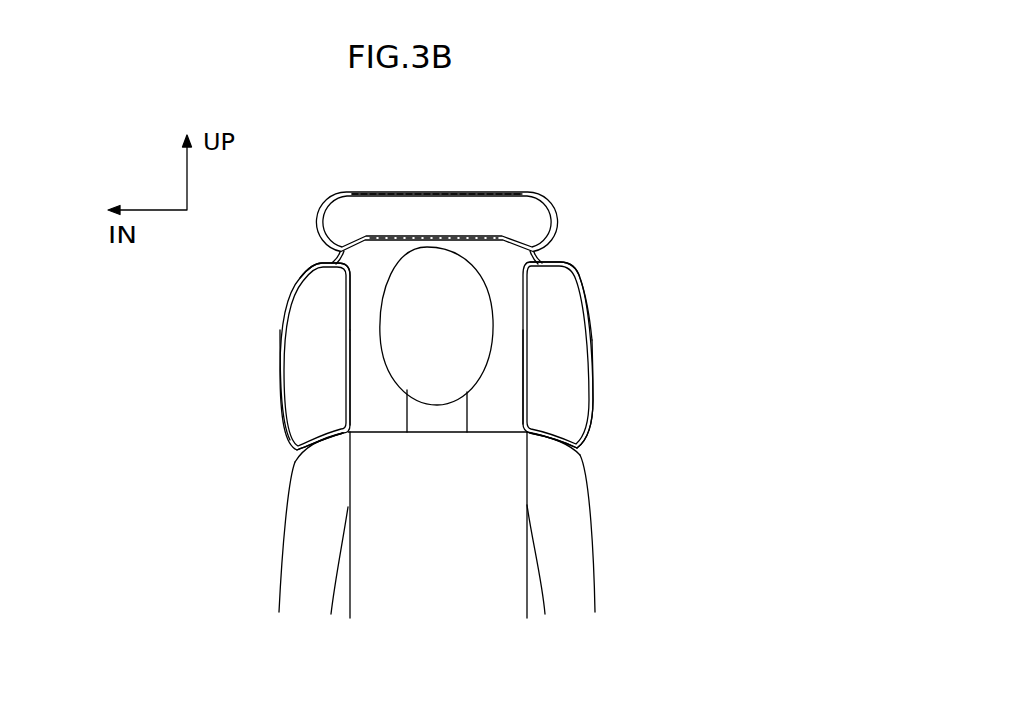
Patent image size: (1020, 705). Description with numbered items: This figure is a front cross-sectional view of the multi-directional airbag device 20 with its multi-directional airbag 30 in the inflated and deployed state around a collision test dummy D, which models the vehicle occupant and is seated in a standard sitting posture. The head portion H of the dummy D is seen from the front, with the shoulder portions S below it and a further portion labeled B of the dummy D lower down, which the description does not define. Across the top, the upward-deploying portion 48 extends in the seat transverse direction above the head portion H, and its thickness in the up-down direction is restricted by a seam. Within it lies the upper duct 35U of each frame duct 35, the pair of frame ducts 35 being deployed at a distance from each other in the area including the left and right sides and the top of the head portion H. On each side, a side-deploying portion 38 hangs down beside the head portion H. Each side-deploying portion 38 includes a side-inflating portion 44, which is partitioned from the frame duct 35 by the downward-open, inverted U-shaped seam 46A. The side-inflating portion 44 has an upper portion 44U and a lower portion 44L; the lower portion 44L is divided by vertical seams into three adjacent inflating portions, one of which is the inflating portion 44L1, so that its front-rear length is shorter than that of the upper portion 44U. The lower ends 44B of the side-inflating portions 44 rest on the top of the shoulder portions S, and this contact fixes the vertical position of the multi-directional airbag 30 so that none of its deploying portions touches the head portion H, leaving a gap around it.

The multi-directional airbag device 20 is at (442, 299).
The multi-directional airbag 30 is at (442, 299).
The frame duct 35 is at (432, 181).
The upper duct 35U is at (342, 211).
The side-deploying portion 38 is at (430, 378).
The side-inflating portion 44 is at (430, 378).
The upper portion of side-inflating portion 44U is at (318, 280).
The lower portion of side-inflating portion 44L is at (430, 389).
The inflating portion 44L1 is at (310, 383).
The lower end of side-inflating portion 44B is at (318, 443).
The U-shaped seam 46A is at (335, 257).
The upward-deploying portion 48 is at (471, 178).
The head portion H is at (470, 273).
The shoulder portion S is at (317, 462).
The body of occupant B is at (417, 498).
The collision test dummy D is at (445, 432).